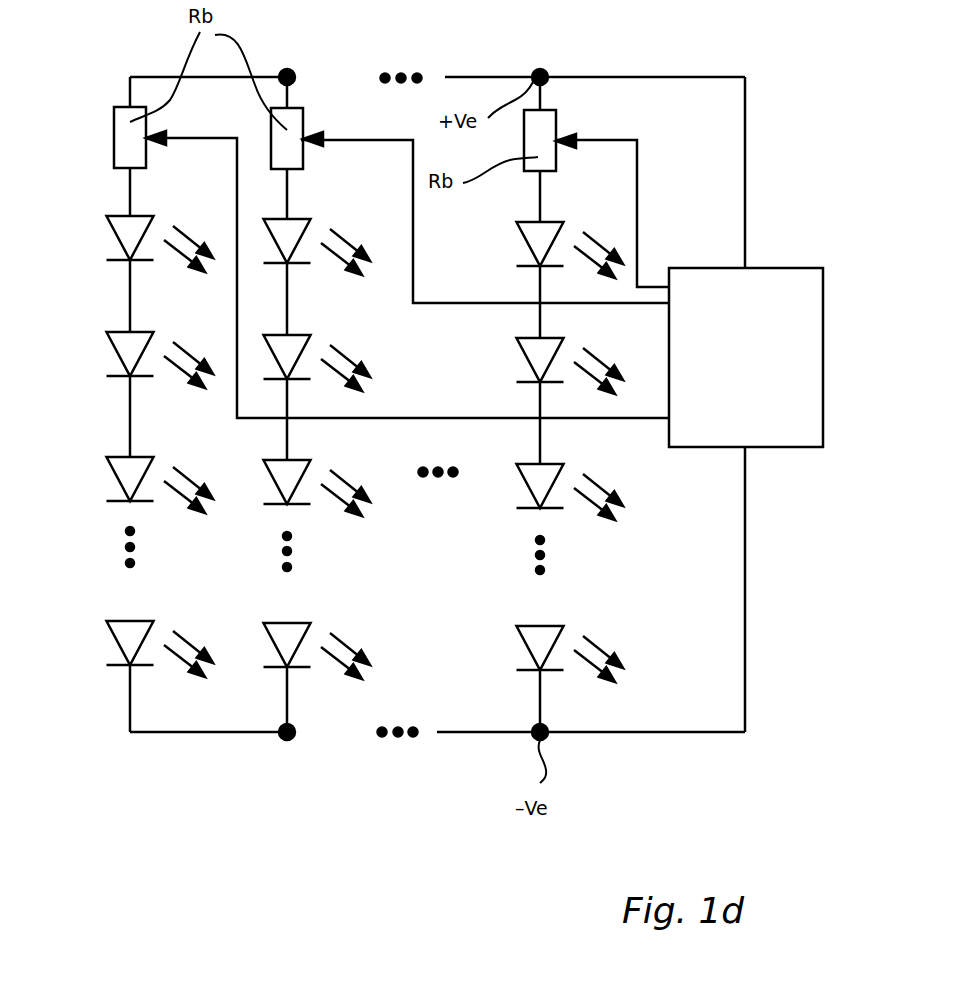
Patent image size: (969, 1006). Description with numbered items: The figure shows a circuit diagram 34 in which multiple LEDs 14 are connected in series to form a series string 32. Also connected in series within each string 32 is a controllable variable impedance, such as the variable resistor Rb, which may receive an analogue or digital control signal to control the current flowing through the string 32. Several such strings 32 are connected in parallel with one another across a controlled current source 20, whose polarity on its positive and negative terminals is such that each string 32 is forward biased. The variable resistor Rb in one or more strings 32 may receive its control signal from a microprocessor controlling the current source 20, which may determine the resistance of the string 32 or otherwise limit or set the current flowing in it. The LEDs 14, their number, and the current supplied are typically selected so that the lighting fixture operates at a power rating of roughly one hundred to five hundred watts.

The LED 14 is at (522, 640).
The controlled current source 20 is at (746, 357).
The series string 32 is at (91, 97).
The circuit diagram 34 is at (343, 782).